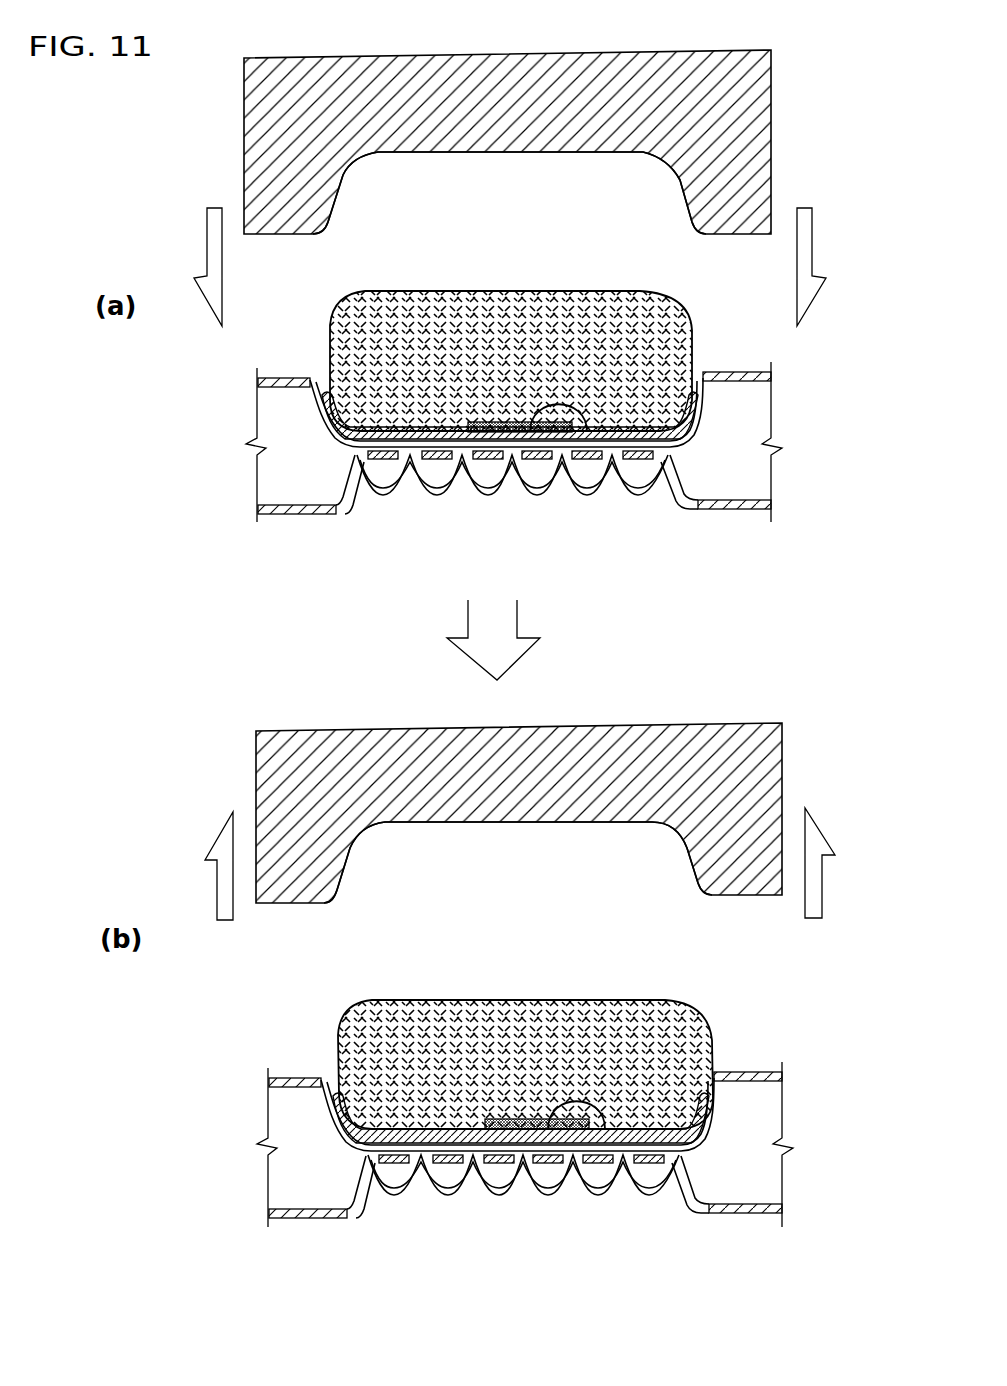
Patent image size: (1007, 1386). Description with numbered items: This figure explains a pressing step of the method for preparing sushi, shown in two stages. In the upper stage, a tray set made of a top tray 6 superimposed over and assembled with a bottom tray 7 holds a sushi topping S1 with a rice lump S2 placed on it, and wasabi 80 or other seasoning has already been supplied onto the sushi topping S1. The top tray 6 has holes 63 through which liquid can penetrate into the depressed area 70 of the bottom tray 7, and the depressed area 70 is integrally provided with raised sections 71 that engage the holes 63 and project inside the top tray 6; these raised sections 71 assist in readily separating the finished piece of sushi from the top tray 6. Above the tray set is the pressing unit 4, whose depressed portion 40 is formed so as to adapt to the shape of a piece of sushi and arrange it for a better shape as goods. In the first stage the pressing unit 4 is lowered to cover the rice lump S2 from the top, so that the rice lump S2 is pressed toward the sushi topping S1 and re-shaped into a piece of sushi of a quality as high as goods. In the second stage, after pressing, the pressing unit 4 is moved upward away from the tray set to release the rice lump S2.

The pressing unit 4 is at (772, 121).
The depressed portion 40 is at (513, 190).
The top tray 6 is at (282, 394).
The bottom tray 7 is at (285, 510).
The depressed area 70 is at (737, 492).
The raised sections 71 is at (378, 480).
The holes 63 is at (428, 470).
The wasabi 80 is at (586, 432).
The sushi topping S1 is at (700, 440).
The rice lump S2 is at (695, 345).